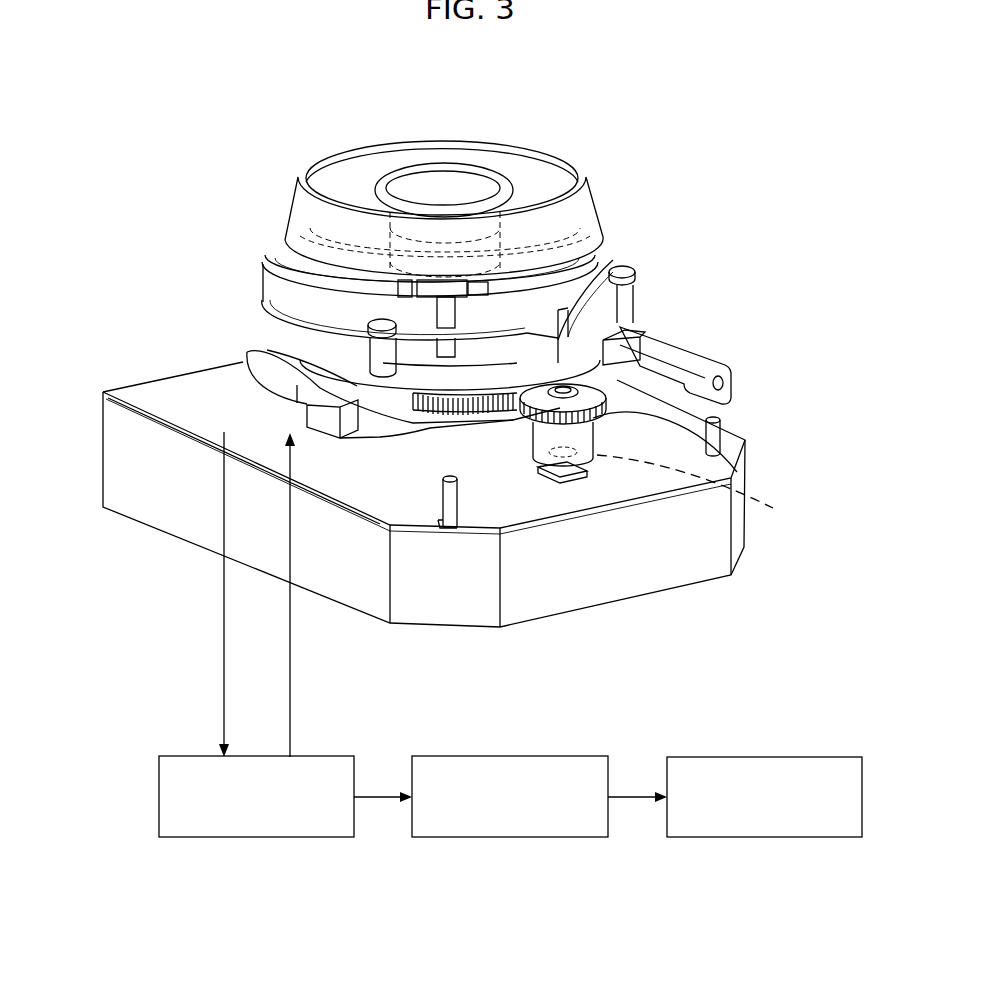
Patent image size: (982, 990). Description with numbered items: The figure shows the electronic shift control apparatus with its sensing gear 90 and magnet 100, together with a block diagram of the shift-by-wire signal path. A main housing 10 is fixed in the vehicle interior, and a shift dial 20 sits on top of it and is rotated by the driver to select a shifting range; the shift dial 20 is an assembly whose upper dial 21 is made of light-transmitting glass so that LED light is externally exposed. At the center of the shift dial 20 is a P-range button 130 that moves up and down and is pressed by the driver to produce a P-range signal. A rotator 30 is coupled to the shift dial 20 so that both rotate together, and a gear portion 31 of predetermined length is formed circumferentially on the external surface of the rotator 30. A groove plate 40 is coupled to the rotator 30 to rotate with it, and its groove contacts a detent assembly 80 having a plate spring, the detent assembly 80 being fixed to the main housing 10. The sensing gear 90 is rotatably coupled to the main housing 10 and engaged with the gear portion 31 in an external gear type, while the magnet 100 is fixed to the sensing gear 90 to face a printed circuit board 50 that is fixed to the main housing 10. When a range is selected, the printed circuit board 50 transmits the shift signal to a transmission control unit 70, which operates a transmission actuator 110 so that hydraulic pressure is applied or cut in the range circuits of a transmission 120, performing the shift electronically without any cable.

The main housing 10 is at (662, 567).
The shift dial 20 is at (596, 166).
The upper dial 21 is at (556, 154).
The rotator 30 is at (280, 332).
The gear portion 31 is at (507, 405).
The groove plate 40 is at (275, 383).
The Printed Circuit Board (PCB) 50 is at (215, 422).
The Transmission Control Unit (TCU) 70 is at (257, 837).
The detent assembly 80 is at (702, 367).
The sensing gear 90 is at (742, 449).
The magnet 100 is at (773, 509).
The transmission actuator 110 is at (510, 837).
The transmission 120 is at (764, 837).
The P-range button 130 is at (463, 184).